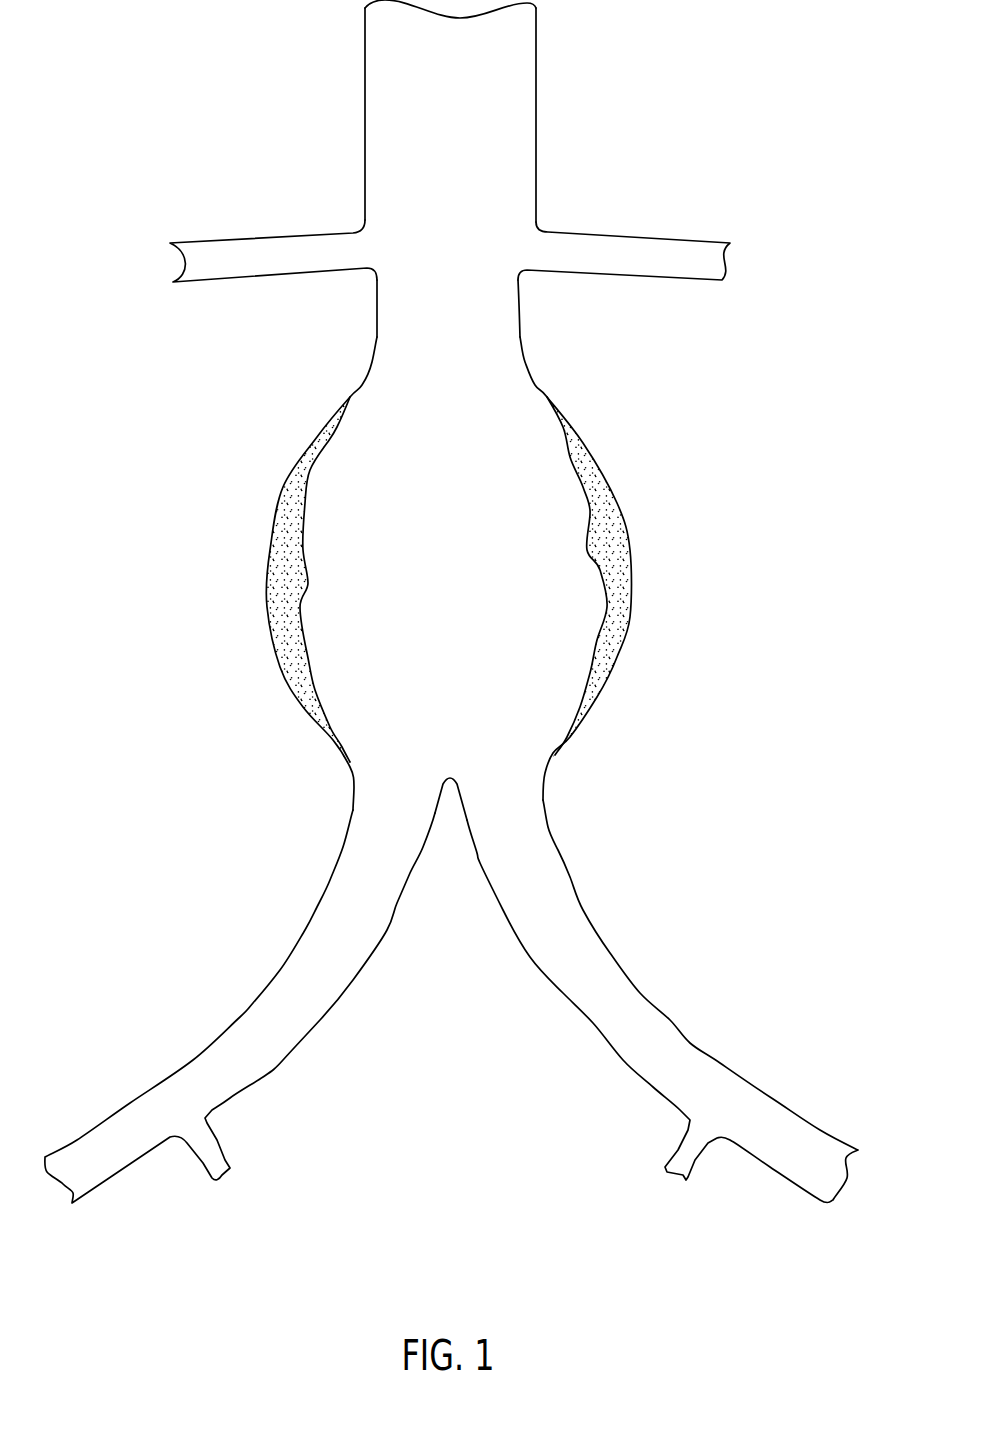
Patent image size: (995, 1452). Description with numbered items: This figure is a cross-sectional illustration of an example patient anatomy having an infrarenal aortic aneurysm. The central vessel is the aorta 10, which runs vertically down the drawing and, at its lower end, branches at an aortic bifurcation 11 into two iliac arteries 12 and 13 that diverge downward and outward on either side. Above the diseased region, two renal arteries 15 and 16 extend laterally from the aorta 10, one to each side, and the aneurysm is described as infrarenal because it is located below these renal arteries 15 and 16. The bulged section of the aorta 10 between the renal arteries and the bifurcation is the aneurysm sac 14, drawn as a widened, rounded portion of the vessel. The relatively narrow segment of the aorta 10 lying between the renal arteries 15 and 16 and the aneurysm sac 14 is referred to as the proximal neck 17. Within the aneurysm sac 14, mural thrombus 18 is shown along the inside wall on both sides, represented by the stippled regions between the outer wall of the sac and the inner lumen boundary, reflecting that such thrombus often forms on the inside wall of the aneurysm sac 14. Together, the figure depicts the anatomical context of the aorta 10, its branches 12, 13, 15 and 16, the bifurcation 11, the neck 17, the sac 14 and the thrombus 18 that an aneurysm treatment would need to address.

The aorta 10 is at (504, 125).
The aortic bifurcation 11 is at (452, 776).
The iliac artery 12 is at (245, 1037).
The iliac artery 13 is at (657, 1042).
The aneurysm sac 14 is at (617, 487).
The renal artery 15 is at (248, 256).
The renal artery 16 is at (654, 256).
The proximal neck 17 is at (500, 339).
The mural thrombus 18 is at (287, 587).